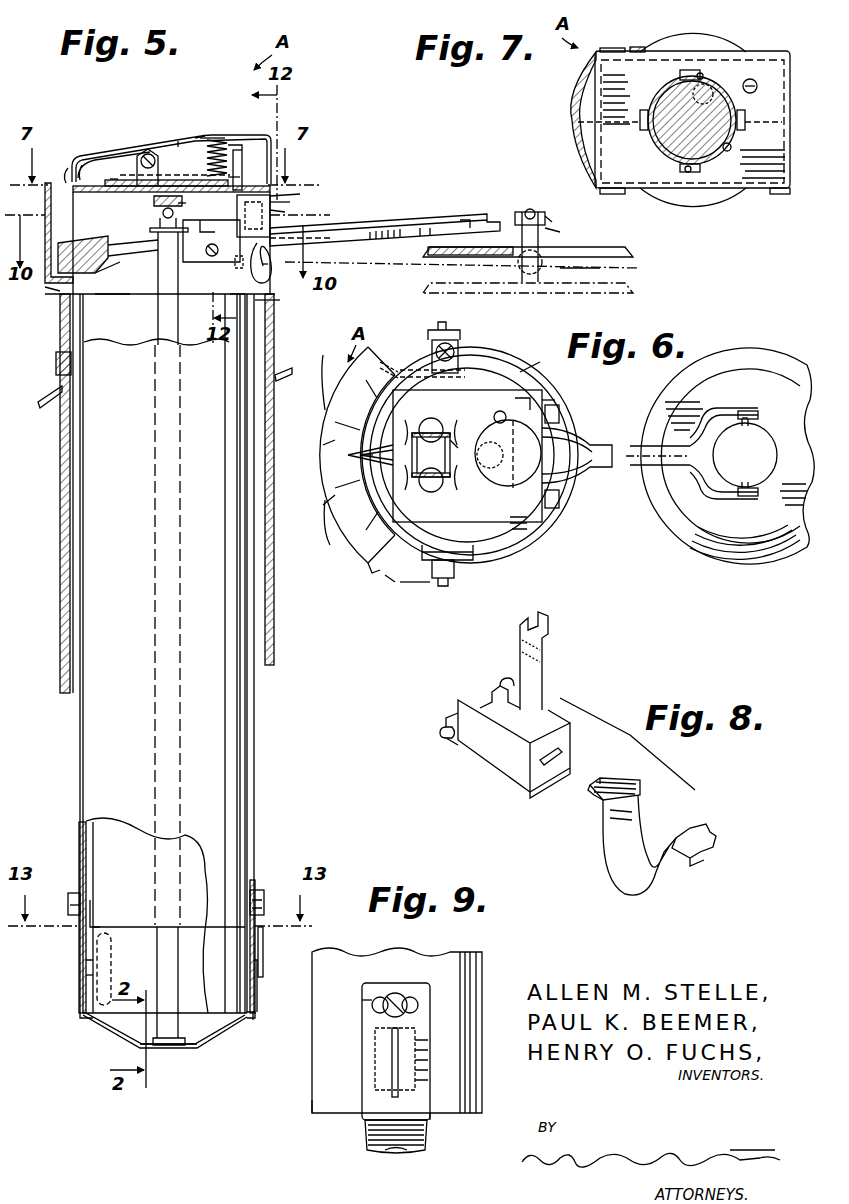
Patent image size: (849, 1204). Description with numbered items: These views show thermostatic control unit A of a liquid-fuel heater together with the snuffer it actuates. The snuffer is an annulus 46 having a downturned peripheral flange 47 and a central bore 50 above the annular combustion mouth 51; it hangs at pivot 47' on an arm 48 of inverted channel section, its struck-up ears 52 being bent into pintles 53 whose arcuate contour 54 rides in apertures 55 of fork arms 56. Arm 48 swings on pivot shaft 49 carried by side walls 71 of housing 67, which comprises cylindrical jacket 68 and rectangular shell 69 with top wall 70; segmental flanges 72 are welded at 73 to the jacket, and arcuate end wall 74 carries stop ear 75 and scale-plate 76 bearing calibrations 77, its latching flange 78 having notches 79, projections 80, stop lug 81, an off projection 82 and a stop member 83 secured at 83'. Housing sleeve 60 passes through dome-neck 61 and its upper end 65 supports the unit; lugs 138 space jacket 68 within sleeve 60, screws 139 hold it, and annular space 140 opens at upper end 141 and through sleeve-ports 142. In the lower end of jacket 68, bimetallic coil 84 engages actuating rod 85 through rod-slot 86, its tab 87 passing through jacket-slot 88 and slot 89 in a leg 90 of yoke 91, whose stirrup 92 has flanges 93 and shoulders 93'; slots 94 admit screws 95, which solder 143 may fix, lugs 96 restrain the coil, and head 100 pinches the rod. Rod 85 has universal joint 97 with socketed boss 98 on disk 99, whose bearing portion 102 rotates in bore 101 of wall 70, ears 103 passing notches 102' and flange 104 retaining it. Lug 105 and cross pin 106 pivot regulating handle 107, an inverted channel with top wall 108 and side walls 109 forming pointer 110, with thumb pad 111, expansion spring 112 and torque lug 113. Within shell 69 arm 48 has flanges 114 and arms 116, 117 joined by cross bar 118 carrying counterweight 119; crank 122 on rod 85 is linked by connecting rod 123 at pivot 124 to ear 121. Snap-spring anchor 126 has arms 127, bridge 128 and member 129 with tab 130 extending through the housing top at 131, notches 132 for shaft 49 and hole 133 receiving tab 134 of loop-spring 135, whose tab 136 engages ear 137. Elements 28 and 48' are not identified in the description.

In FIG. 5, the lever 28 is at (112, 179).
In FIG. 5, the annulus 46 is at (588, 247).
In FIG. 6, the annulus 46 is at (678, 396).
In FIG. 5, the downturned outer peripheral flange 47 is at (541, 240).
In FIG. 6, the downturned outer peripheral flange 47 is at (727, 448).
In FIG. 5, the pivotal mounting 47' is at (522, 202).
In FIG. 6, the pivotal mounting 47' is at (734, 374).
In FIG. 5, the arm 48 is at (385, 222).
In FIG. 6, the arm 48 is at (616, 451).
In FIG. 5, the arm (alternate position) 48' is at (462, 273).
In FIG. 5, the pivot shaft 49 is at (212, 257).
In FIG. 5, the bore 50 is at (558, 232).
In FIG. 6, the bore 50 is at (728, 470).
In FIG. 5, the annular combustion mouth 51 is at (602, 268).
In FIG. 5, the vertical ears 52 is at (544, 262).
In FIG. 6, the vertical ears 52 is at (743, 470).
In FIG. 6, the pintles 53 is at (754, 411).
In FIG. 5, the arcuate cross-sectional contour 54 is at (549, 216).
In FIG. 5, the apertures 55 is at (533, 208).
In FIG. 5, the fork arms 56 is at (470, 218).
In FIG. 6, the fork arms 56 is at (716, 412).
In FIG. 5, the housing sleeve 60 is at (276, 362).
In FIG. 6, the housing sleeve 60 is at (492, 362).
In FIG. 5, the dome-neck 61 is at (280, 340).
In FIG. 5, the upper end of sleeve 65 is at (290, 322).
In FIG. 5, the housing 67 is at (64, 318).
In FIG. 7, the housing 67 is at (718, 30).
In FIG. 6, the housing 67 is at (532, 366).
In FIG. 9, the housing 67 is at (310, 1108).
In FIG. 5, the cylindrical jacket 68 is at (80, 345).
In FIG. 7, the cylindrical jacket 68 is at (736, 46).
In FIG. 6, the cylindrical jacket 68 is at (415, 584).
In FIG. 9, the cylindrical jacket 68 is at (486, 966).
In FIG. 5, the rectangular shell 69 is at (296, 194).
In FIG. 7, the rectangular shell 69 is at (752, 190).
In FIG. 6, the rectangular shell 69 is at (545, 520).
In FIG. 5, the top wall 70 is at (290, 202).
In FIG. 7, the top wall 70 is at (758, 176).
In FIG. 6, the top wall 70 is at (556, 402).
In FIG. 5, the side walls 71 is at (122, 297).
In FIG. 7, the side walls 71 is at (765, 54).
In FIG. 7, the segmental horizontal flanges 72 is at (700, 36).
In FIG. 6, the segmental horizontal flanges 72 is at (508, 378).
In FIG. 5, the weld 73 is at (244, 304).
In FIG. 5, the end wall 74 is at (46, 235).
In FIG. 7, the end wall 74 is at (582, 92).
In FIG. 5, the struck-up ear 75 is at (46, 293).
In FIG. 5, the scale-plate 76 is at (68, 172).
In FIG. 6, the scale-plate 76 is at (372, 574).
In FIG. 6, the scale marks 77 is at (335, 392).
In FIG. 6, the latching flange 78 is at (325, 410).
In FIG. 6, the notches 79 is at (330, 525).
In FIG. 5, the projections 80 is at (92, 160).
In FIG. 6, the projections 80 is at (325, 446).
In FIG. 6, the stop lug 81 is at (386, 580).
In FIG. 6, the off projection 82 is at (392, 365).
In FIG. 9, the off projection 82 is at (394, 1082).
In FIG. 6, the stop member 83 is at (445, 449).
In FIG. 6, the securing point 83' is at (433, 330).
In FIG. 5, the thermostatic element 84 is at (93, 976).
In FIG. 5, the actuating rod 85 is at (158, 330).
In FIG. 5, the rod-slot 86 is at (165, 927).
In FIG. 5, the tab 87 is at (263, 945).
In FIG. 9, the jacket-slot 88 is at (378, 1052).
In FIG. 9, the slot 89 is at (394, 1062).
In FIG. 5, the legs 90 is at (80, 958).
In FIG. 9, the legs 90 is at (430, 990).
In FIG. 5, the calibration adjustment member 91 is at (258, 1016).
In FIG. 9, the calibration adjustment member 91 is at (360, 1132).
In FIG. 5, the stirrup portion 92 is at (145, 1052).
In FIG. 9, the stirrup portion 92 is at (396, 1154).
In FIG. 5, the vertical flanges 93 is at (165, 1040).
In FIG. 5, the horizontal shoulders 93' is at (150, 1029).
In FIG. 9, the horizontal shoulders 93' is at (447, 1131).
In FIG. 5, the horizontal slots 94 is at (96, 915).
In FIG. 9, the horizontal slots 94 is at (415, 995).
In FIG. 5, the attachment screws 95 is at (68, 906).
In FIG. 9, the attachment screws 95 is at (396, 993).
In FIG. 5, the elongated lugs 96 is at (112, 940).
In FIG. 5, the universal joint connection 97 is at (158, 216).
In FIG. 7, the universal joint connection 97 is at (690, 85).
In FIG. 5, the socketed boss 98 is at (154, 203).
In FIG. 7, the socketed boss 98 is at (720, 98).
In FIG. 5, the disk 99 is at (150, 178).
In FIG. 7, the disk 99 is at (666, 140).
In FIG. 5, the head 100 is at (155, 1035).
In FIG. 7, the bore 101 is at (732, 148).
In FIG. 5, the bearing portion 102 is at (175, 164).
In FIG. 7, the bearing portion 102 is at (659, 121).
In FIG. 7, the notches 102' is at (686, 117).
In FIG. 5, the ears 103 is at (112, 192).
In FIG. 7, the ears 103 is at (669, 121).
In FIG. 5, the annular flange 104 is at (137, 155).
In FIG. 5, the lug 105 is at (215, 138).
In FIG. 6, the lug 105 is at (433, 418).
In FIG. 5, the cross pin 106 is at (152, 156).
In FIG. 6, the cross pin 106 is at (422, 478).
In FIG. 5, the regulating handle 107 is at (177, 148).
In FIG. 6, the regulating handle 107 is at (456, 440).
In FIG. 5, the top wall 108 is at (200, 136).
In FIG. 6, the top wall 108 is at (452, 474).
In FIG. 5, the side walls 109 is at (218, 142).
In FIG. 6, the side walls 109 is at (418, 428).
In FIG. 5, the pointer 110 is at (80, 165).
In FIG. 6, the pointer 110 is at (348, 457).
In FIG. 5, the thumb pressure pad 111 is at (243, 158).
In FIG. 6, the thumb pressure pad 111 is at (532, 398).
In FIG. 5, the expansion spring 112 is at (236, 146).
In FIG. 6, the expansion spring 112 is at (508, 490).
In FIG. 5, the lug 113 is at (268, 145).
In FIG. 5, the flanges 114 is at (116, 268).
In FIG. 5, the arm 116 is at (132, 250).
In FIG. 6, the arm 116 is at (560, 416).
In FIG. 6, the arm 117 is at (560, 512).
In FIG. 5, the cross bar 118 is at (90, 266).
In FIG. 5, the counterweight 119 is at (45, 205).
In FIG. 5, the ear 121 is at (262, 214).
In FIG. 5, the crank arm 122 is at (152, 232).
In FIG. 5, the connecting rod 123 is at (184, 206).
In FIG. 5, the pivotal connection 124 is at (245, 212).
In FIG. 8, the snap-spring anchor 126 is at (500, 782).
In FIG. 5, the arms 127 is at (216, 264).
In FIG. 8, the arms 127 is at (506, 690).
In FIG. 8, the bridge 128 is at (530, 796).
In FIG. 5, the member 129 is at (286, 211).
In FIG. 8, the member 129 is at (542, 664).
In FIG. 8, the attachment tab 130 is at (540, 616).
In FIG. 5, the tab opening 131 is at (236, 181).
In FIG. 7, the tab opening 131 is at (758, 86).
In FIG. 6, the tab opening 131 is at (498, 410).
In FIG. 8, the notches 132 is at (498, 684).
In FIG. 8, the hole 133 is at (552, 766).
In FIG. 5, the tab 134 is at (239, 270).
In FIG. 8, the tab 134 is at (606, 780).
In FIG. 5, the snap-over loop-spring 135 is at (270, 276).
In FIG. 8, the snap-over loop-spring 135 is at (603, 866).
In FIG. 5, the tab 136 is at (270, 263).
In FIG. 8, the tab 136 is at (718, 848).
In FIG. 5, the ear 137 is at (306, 237).
In FIG. 6, the lugs 138 is at (470, 368).
In FIG. 6, the sleeve-carried screws 139 is at (458, 342).
In FIG. 5, the annular space 140 is at (64, 512).
In FIG. 5, the upper end 141 is at (280, 300).
In FIG. 6, the upper end 141 is at (528, 535).
In FIG. 5, the sleeve-ports 142 is at (64, 352).
In FIG. 9, the solder 143 is at (386, 992).